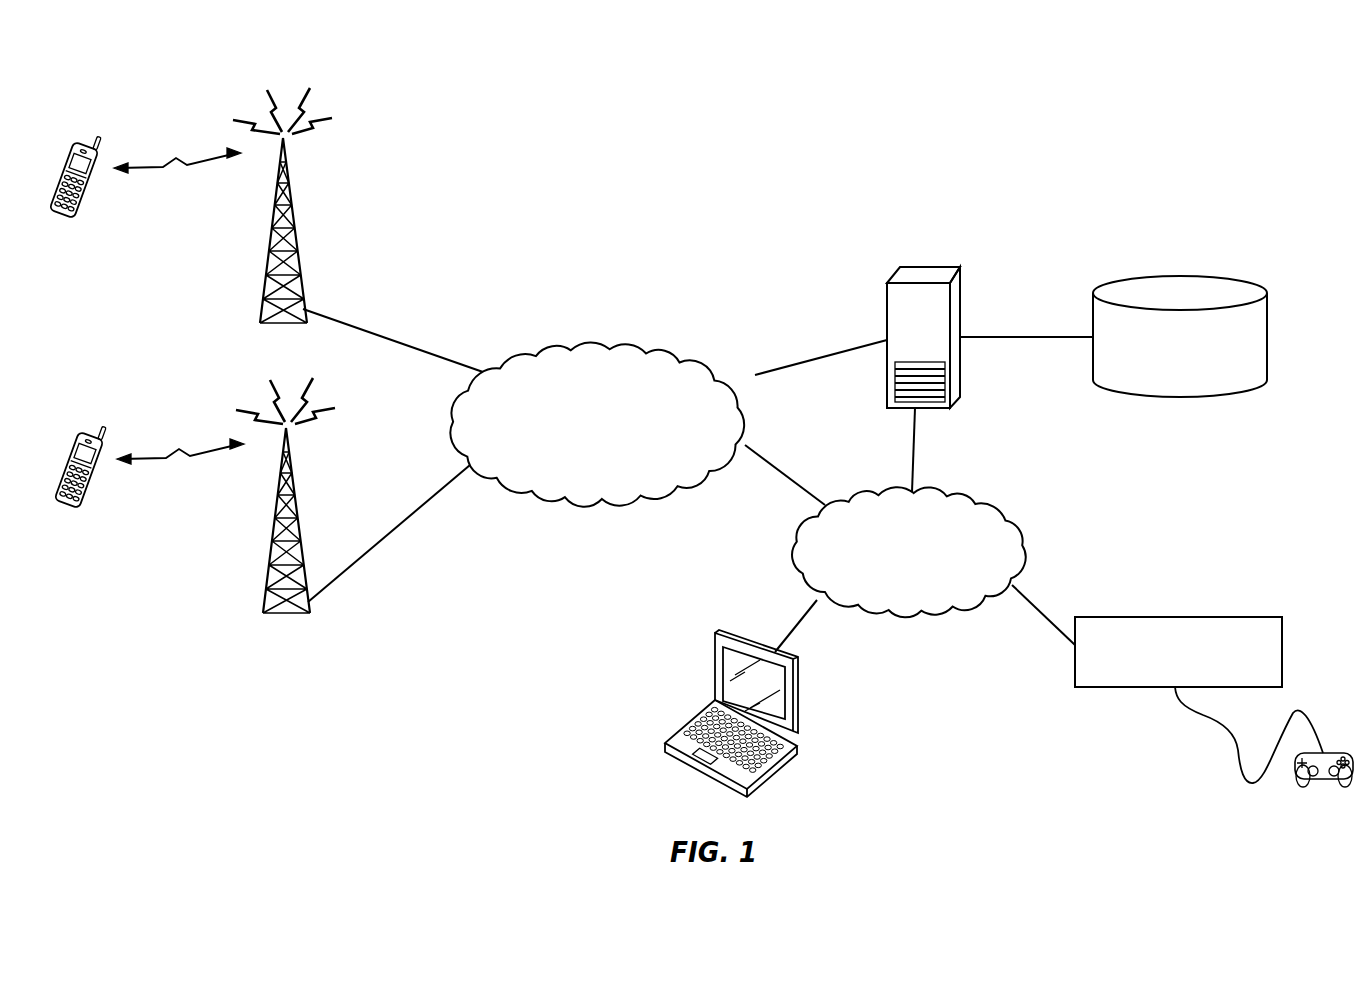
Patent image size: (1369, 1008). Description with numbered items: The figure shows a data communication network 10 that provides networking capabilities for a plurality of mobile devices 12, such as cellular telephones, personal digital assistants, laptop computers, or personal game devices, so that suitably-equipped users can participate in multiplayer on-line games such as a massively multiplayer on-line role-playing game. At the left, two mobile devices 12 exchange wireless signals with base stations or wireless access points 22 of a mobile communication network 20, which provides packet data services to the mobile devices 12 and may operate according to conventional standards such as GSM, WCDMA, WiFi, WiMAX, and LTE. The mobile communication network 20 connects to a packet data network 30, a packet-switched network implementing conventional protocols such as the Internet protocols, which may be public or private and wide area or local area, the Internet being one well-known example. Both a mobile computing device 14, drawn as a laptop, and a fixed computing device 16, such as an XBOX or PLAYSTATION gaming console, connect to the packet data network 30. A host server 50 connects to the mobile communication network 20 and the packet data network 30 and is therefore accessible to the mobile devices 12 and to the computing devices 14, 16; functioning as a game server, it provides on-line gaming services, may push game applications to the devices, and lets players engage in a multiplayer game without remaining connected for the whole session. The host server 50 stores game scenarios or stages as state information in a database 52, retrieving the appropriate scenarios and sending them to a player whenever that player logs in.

The data communication network 10 is at (957, 122).
The mobile device 12 is at (77, 198).
The mobile computing device 14 is at (798, 680).
The fixed computing device 16 is at (1165, 676).
The mobile communication network 20 is at (582, 477).
The base station 22 is at (300, 240).
The packet data network 30 is at (922, 577).
The host server 50 is at (960, 310).
The database 52 is at (1167, 380).